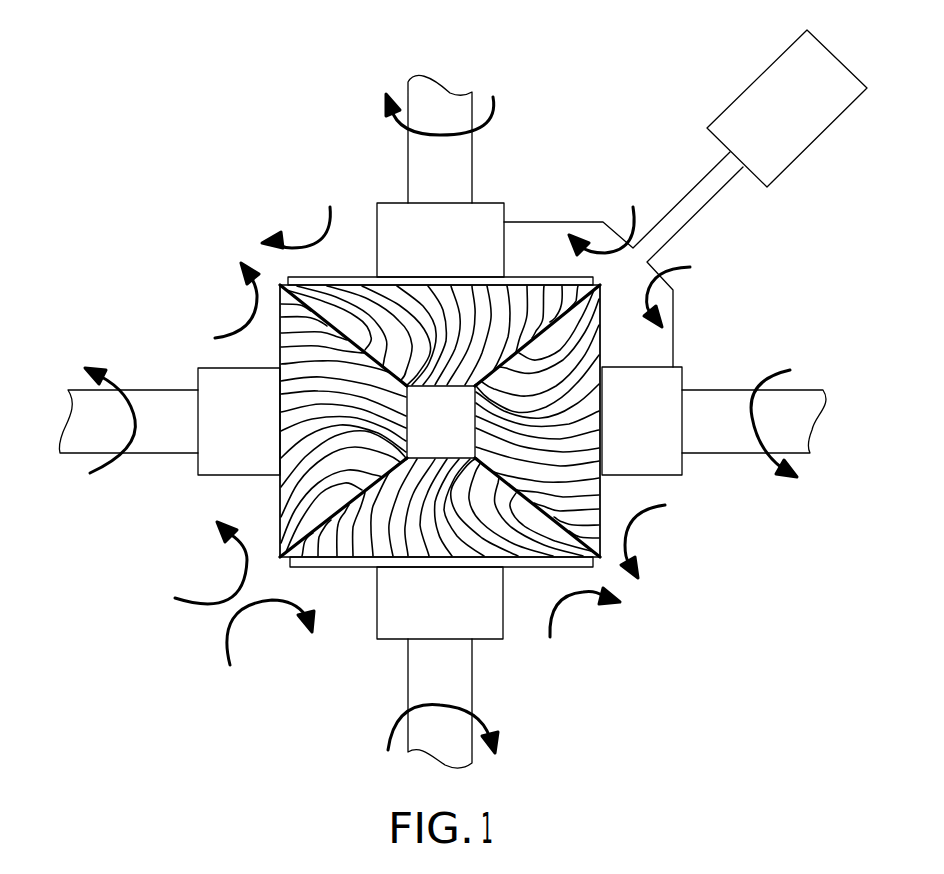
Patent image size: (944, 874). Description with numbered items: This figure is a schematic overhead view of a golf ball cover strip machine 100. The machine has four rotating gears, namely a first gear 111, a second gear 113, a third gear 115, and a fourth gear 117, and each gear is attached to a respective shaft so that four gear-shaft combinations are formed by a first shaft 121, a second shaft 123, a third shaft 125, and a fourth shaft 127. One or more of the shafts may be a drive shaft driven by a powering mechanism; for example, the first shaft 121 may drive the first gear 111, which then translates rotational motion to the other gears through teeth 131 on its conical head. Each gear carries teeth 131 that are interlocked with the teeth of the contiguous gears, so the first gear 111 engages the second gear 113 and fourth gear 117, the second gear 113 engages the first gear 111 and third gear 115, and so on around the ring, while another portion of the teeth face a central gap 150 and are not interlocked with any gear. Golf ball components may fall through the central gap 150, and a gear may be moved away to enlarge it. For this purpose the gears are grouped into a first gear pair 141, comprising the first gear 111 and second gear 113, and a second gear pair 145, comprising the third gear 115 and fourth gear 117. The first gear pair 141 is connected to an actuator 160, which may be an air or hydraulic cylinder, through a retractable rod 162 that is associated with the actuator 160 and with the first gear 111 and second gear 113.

The golf ball cover strip machine 100 is at (190, 188).
The first gear 111 is at (342, 278).
The second gear 113 is at (602, 482).
The third gear 115 is at (533, 567).
The fourth gear 117 is at (280, 502).
The first shaft 121 is at (472, 160).
The second shaft 123 is at (732, 390).
The third shaft 125 is at (473, 693).
The fourth shaft 127 is at (145, 388).
The teeth 131 is at (370, 530).
The first gear pair 141 is at (722, 248).
The second gear pair 145 is at (178, 652).
The central gap 150 is at (442, 404).
The actuator 160 is at (765, 93).
The retractable rod 162 is at (683, 195).